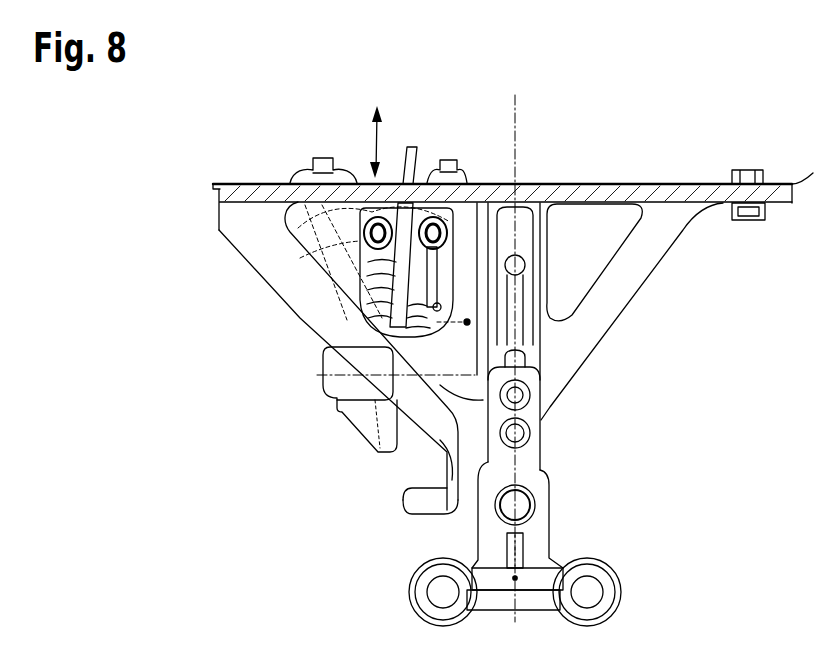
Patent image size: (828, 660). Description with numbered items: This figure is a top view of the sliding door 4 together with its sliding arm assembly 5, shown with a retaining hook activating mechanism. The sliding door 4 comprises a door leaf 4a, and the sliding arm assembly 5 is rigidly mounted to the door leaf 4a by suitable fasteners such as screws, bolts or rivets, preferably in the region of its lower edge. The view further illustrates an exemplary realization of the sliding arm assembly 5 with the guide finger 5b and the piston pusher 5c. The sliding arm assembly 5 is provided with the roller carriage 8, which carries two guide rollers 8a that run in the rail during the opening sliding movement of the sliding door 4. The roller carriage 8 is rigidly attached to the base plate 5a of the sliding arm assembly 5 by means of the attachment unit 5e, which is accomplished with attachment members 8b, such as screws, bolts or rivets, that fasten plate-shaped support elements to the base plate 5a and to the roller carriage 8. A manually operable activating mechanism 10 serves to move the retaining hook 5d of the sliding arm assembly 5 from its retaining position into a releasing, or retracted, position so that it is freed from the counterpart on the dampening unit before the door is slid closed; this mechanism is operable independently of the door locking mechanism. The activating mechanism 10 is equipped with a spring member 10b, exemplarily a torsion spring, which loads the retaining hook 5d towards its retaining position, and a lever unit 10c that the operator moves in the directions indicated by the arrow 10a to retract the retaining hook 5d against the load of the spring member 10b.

The sliding door 4 is at (198, 179).
The door leaf 4a is at (686, 192).
The sliding arm assembly 5 is at (592, 389).
The base plate 5a is at (632, 311).
The guide finger 5b is at (417, 500).
The piston pusher 5c is at (447, 472).
The retaining hook 5d is at (362, 426).
The attachment unit 5e is at (560, 457).
The roller carriage 8 is at (566, 545).
The guide rollers 8a is at (423, 598).
The attachment members 8b is at (528, 428).
The manually operable activating mechanism 10 is at (455, 274).
The arrow 10a is at (374, 137).
The spring member 10b is at (375, 302).
The lever unit 10c is at (376, 262).